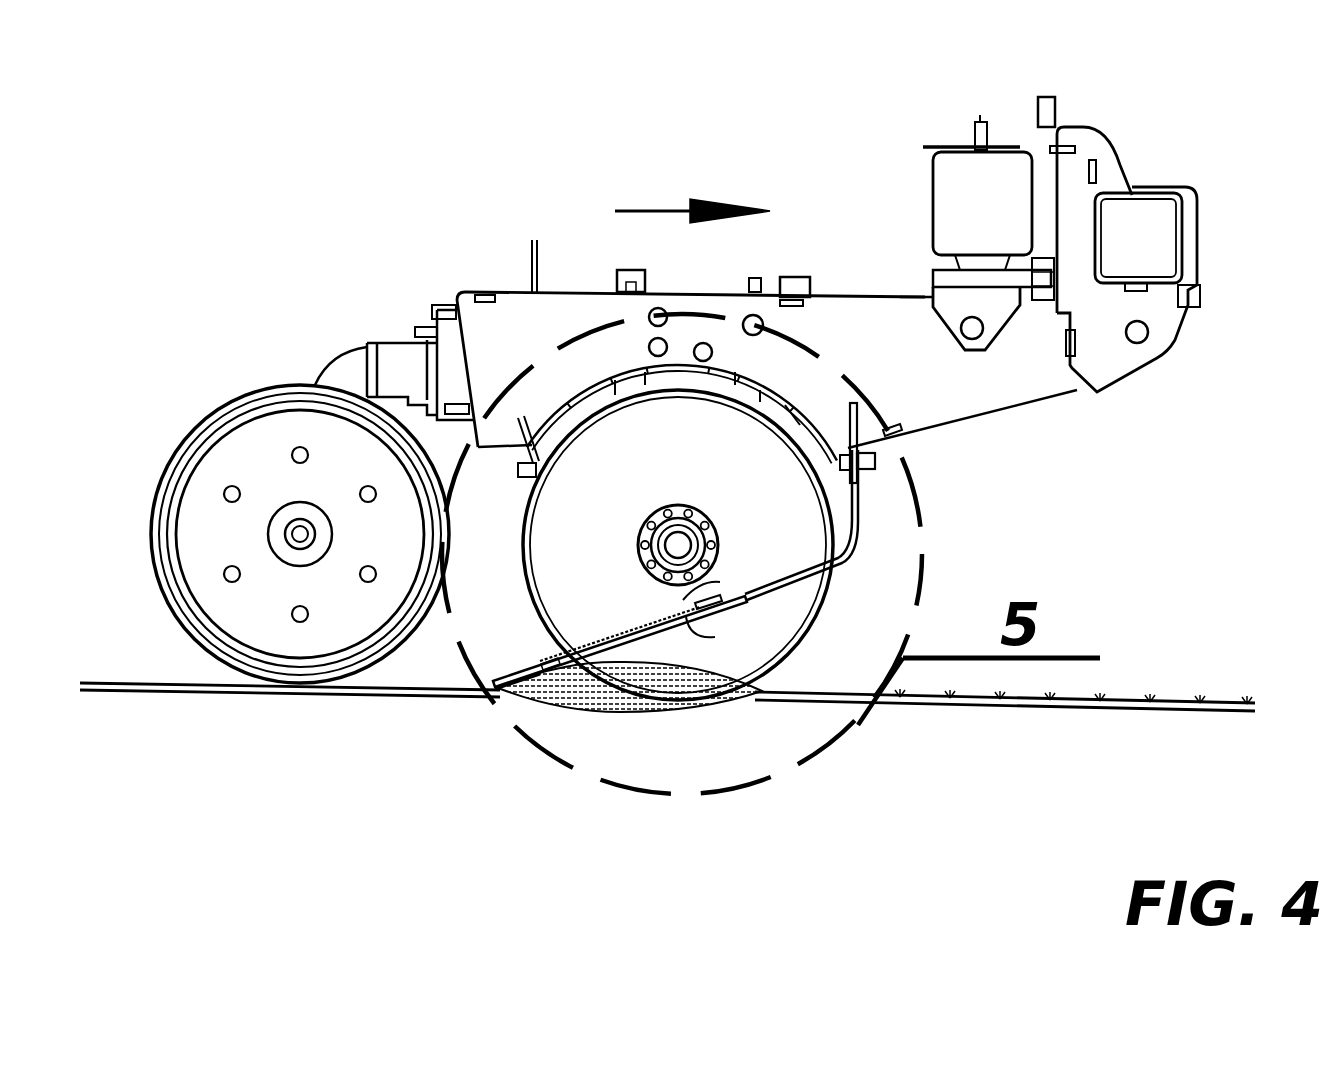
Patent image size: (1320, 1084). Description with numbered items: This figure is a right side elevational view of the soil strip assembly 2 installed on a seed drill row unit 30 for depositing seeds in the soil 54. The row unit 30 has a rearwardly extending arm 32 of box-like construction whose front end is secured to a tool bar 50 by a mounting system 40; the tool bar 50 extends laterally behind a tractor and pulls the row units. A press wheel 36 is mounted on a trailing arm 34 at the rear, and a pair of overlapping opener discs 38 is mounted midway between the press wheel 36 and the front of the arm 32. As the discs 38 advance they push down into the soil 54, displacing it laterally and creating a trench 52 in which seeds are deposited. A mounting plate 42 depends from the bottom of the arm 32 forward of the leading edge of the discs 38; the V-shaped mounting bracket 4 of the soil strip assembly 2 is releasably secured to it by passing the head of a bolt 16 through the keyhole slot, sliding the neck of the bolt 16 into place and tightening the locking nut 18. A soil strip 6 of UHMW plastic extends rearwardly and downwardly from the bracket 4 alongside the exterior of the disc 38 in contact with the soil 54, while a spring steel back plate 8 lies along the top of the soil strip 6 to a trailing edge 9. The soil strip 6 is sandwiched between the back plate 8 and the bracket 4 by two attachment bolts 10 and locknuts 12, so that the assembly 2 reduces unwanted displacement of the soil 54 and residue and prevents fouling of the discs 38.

The soil strip assembly 2 is at (719, 569).
The mounting bracket 4 is at (858, 537).
The soil strip 6 is at (540, 668).
The back plate 8 is at (648, 632).
The trailing edge 9 is at (556, 658).
The attachment bolt 10 is at (716, 637).
The locknut 12 is at (710, 590).
The bolt 16 is at (850, 462).
The locking nut 18 is at (870, 470).
The seed drill row unit 30 is at (383, 242).
The arm 32 is at (985, 413).
The trailing arm 34 is at (350, 352).
The press wheel 36 is at (180, 455).
The opener disc 38 is at (828, 641).
The mounting system 40 is at (1074, 225).
The mounting plate 42 is at (855, 500).
The tool bar 50 is at (1138, 203).
The trench 52 is at (770, 681).
The soil 54 is at (385, 698).